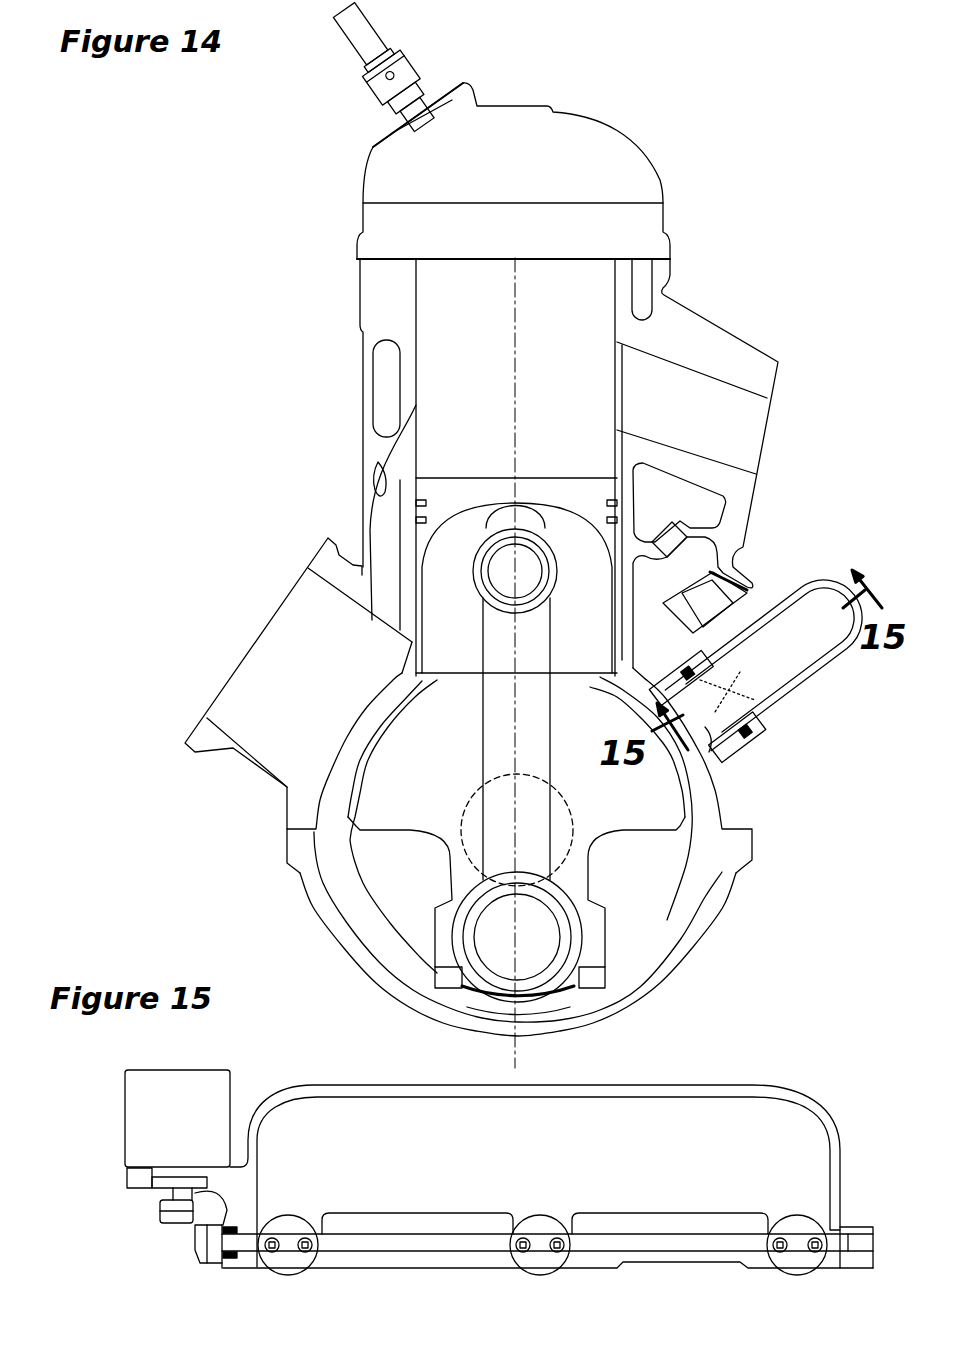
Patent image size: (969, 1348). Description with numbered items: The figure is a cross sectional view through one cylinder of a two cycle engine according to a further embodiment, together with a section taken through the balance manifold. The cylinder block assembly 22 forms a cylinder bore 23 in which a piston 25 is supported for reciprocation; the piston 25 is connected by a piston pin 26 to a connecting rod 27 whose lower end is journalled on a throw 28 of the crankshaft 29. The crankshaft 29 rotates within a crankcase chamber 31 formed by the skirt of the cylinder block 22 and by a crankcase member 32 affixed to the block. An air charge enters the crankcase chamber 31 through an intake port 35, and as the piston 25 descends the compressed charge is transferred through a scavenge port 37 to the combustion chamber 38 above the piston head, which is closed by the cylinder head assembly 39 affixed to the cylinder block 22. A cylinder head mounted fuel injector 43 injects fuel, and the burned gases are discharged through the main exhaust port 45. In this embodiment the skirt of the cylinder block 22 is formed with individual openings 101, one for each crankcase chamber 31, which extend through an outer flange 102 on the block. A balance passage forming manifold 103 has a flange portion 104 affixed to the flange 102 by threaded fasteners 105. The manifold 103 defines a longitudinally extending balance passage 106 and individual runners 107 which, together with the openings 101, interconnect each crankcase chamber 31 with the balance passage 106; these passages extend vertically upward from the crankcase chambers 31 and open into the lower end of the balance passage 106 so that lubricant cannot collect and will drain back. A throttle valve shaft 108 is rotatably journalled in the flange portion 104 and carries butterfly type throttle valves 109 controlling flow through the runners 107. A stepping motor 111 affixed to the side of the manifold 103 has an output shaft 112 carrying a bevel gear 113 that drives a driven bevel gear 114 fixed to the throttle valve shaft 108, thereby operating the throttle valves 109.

In FIG. 14, the cylinder block assembly 22 is at (362, 333).
In FIG. 14, the cylinder bore 23 is at (612, 357).
In FIG. 14, the piston 25 is at (538, 478).
In FIG. 14, the piston pin 26 is at (542, 563).
In FIG. 14, the connecting rod 27 is at (557, 703).
In FIG. 14, the throw 28 is at (575, 960).
In FIG. 14, the crankshaft 29 is at (573, 785).
In FIG. 14, the crankcase chamber 31 is at (372, 887).
In FIG. 14, the crankcase member 32 is at (737, 882).
In FIG. 14, the intake port 35 is at (247, 742).
In FIG. 14, the scavenge port 37 is at (382, 490).
In FIG. 14, the combustion chamber 38 is at (443, 327).
In FIG. 14, the cylinder head assembly 39 is at (667, 222).
In FIG. 14, the fuel injector 43 is at (413, 52).
In FIG. 14, the main exhaust port 45 is at (650, 440).
In FIG. 14, the opening 101 is at (743, 763).
In FIG. 14, the outer flange 102 is at (760, 753).
In FIG. 14, the balance passage forming manifold 103 is at (811, 575).
In FIG. 15, the balance passage forming manifold 103 is at (796, 1080).
In FIG. 14, the flange portion 104 is at (758, 738).
In FIG. 15, the flange portion 104 is at (873, 1230).
In FIG. 14, the threaded fastener 105 is at (753, 600).
In FIG. 14, the balance passage 106 is at (786, 650).
In FIG. 15, the balance passage 106 is at (545, 1153).
In FIG. 14, the runner 107 is at (780, 682).
In FIG. 15, the runner 107 is at (314, 1213).
In FIG. 15, the throttle valve shaft 108 is at (373, 1252).
In FIG. 15, the butterfly type throttle valve 109 is at (263, 1223).
In FIG. 15, the stepping motor 111 is at (228, 1102).
In FIG. 15, the output shaft 112 is at (167, 1192).
In FIG. 15, the bevel gear 113 is at (200, 1223).
In FIG. 15, the driven bevel gear 114 is at (197, 1257).